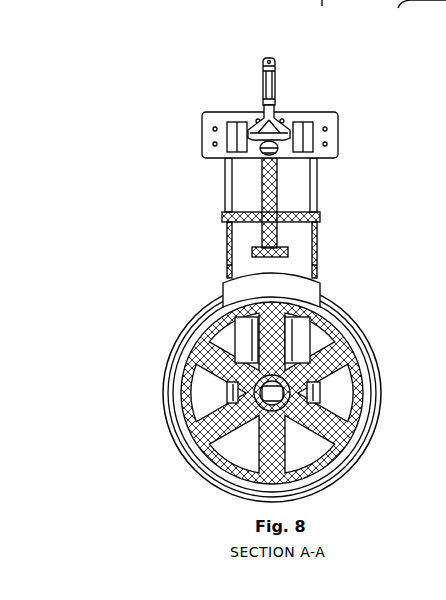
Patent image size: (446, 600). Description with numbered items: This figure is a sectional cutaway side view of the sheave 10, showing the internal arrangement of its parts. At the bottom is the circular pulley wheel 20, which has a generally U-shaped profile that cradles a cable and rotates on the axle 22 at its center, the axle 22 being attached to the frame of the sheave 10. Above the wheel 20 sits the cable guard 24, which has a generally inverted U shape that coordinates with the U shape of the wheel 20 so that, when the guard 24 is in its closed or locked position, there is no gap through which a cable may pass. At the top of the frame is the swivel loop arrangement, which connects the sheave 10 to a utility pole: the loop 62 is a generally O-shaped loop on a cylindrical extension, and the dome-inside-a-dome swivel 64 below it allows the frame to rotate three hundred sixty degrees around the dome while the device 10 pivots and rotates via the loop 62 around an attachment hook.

The sheave 10 is at (362, 121).
The pulley wheel 20 is at (178, 455).
The axle 22 is at (268, 393).
The cable guard 24 is at (252, 291).
The loop 62 is at (264, 62).
The dome-inside-a-dome swivel 64 is at (250, 128).